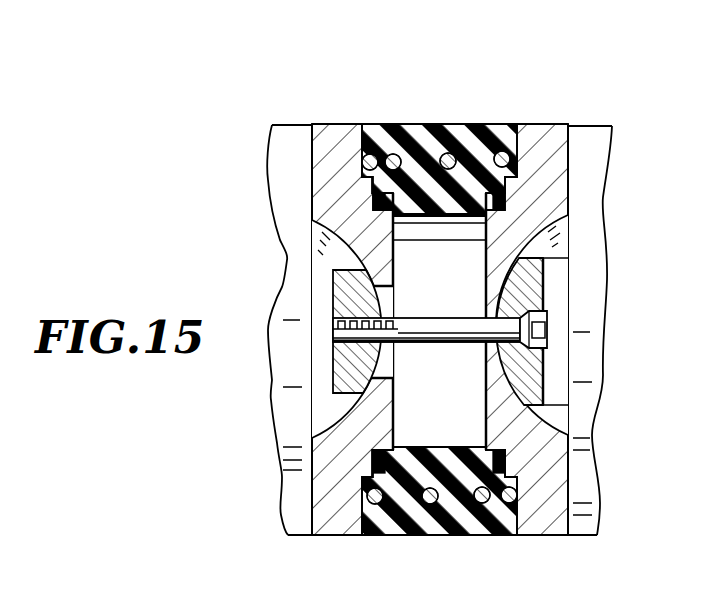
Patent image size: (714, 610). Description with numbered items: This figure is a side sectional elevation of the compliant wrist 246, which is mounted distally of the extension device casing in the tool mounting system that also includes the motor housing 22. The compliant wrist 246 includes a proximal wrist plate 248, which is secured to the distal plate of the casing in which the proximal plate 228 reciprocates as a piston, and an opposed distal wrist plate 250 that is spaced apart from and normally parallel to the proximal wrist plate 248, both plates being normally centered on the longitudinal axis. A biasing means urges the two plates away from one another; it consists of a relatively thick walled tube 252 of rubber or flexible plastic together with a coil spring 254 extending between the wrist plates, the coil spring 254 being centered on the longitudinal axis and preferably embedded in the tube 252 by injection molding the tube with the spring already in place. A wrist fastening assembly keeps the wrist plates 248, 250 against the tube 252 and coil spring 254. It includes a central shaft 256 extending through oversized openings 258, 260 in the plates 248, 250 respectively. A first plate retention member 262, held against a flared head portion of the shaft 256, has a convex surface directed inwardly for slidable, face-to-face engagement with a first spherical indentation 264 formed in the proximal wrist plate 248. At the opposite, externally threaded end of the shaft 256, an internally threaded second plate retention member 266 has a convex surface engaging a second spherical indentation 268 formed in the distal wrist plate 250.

The motor housing 22 is at (268, 173).
The proximal plate 228 is at (583, 197).
The compliant wrist 246 is at (458, 98).
The proximal wrist plate 248 is at (558, 158).
The distal wrist plate 250 is at (333, 488).
The tube 252 is at (483, 124).
The coil spring 254 is at (385, 155).
The central shaft 256 is at (413, 322).
The oversized opening 258 is at (502, 282).
The oversized opening 260 is at (377, 380).
The first plate retention member 262 is at (540, 281).
The first spherical indentation 264 is at (550, 432).
The second plate retention member 266 is at (340, 290).
The second spherical indentation 268 is at (342, 428).